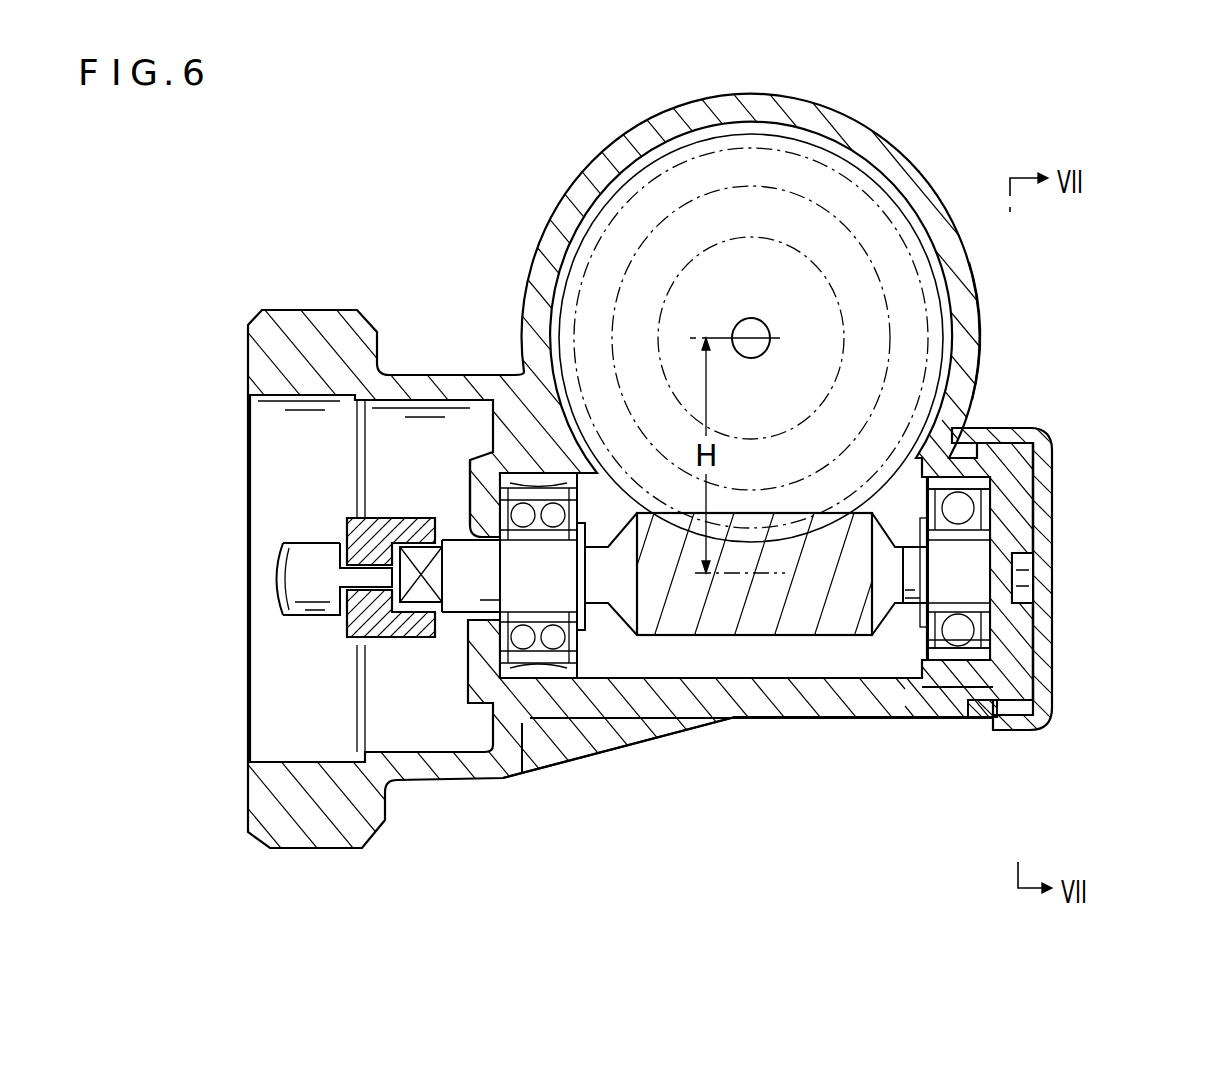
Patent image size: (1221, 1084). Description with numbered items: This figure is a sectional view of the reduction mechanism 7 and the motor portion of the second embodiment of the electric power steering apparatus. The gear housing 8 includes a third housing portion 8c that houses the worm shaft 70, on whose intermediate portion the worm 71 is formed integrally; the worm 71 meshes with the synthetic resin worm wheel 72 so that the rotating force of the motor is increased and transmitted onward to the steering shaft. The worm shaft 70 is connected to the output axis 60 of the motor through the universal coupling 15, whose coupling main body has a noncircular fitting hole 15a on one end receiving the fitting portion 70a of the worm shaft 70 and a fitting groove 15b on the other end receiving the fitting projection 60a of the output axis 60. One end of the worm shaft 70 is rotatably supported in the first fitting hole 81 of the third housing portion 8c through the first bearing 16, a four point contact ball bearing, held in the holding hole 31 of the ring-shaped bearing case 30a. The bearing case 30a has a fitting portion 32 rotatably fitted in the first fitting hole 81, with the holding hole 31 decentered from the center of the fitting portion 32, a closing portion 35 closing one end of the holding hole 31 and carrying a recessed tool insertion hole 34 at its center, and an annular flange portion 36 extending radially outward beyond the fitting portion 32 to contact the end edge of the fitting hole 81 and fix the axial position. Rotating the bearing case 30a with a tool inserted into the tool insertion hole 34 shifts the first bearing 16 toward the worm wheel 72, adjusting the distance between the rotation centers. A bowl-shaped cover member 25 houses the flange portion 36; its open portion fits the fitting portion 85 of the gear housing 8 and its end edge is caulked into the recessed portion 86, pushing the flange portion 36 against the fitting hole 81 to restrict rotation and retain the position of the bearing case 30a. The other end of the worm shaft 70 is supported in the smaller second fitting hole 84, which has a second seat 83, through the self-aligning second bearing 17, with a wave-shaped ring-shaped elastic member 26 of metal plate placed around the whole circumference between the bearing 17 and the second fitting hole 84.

The reduction mechanism 7 is at (905, 192).
The gear housing 8 is at (868, 135).
The third housing portion 8c is at (664, 672).
The universal coupling 15 is at (403, 518).
The fitting hole 15a is at (447, 607).
The fitting groove 15b is at (383, 602).
The first bearing 16 is at (962, 663).
The second bearing 17 is at (575, 632).
The cover member 25 is at (1057, 470).
The elastic member 26 is at (553, 655).
The bearing case 30a is at (1035, 508).
The holding hole 31 is at (957, 662).
The fitting portion 32 is at (933, 665).
The tool insertion hole 34 is at (1052, 578).
The closing portion 35 is at (1005, 628).
The flange portion 36 is at (1030, 728).
The output axis 60 is at (280, 563).
The fitting projection 60a is at (352, 545).
The worm shaft 70 is at (722, 637).
The fitting portion 70a is at (417, 605).
The worm 71 is at (755, 628).
The worm wheel 72 is at (940, 300).
The first fitting hole 81 is at (887, 716).
The second seat 83 is at (470, 483).
The second fitting hole 84 is at (516, 473).
The fitting portion 85 is at (990, 428).
The recessed portion 86 is at (978, 717).